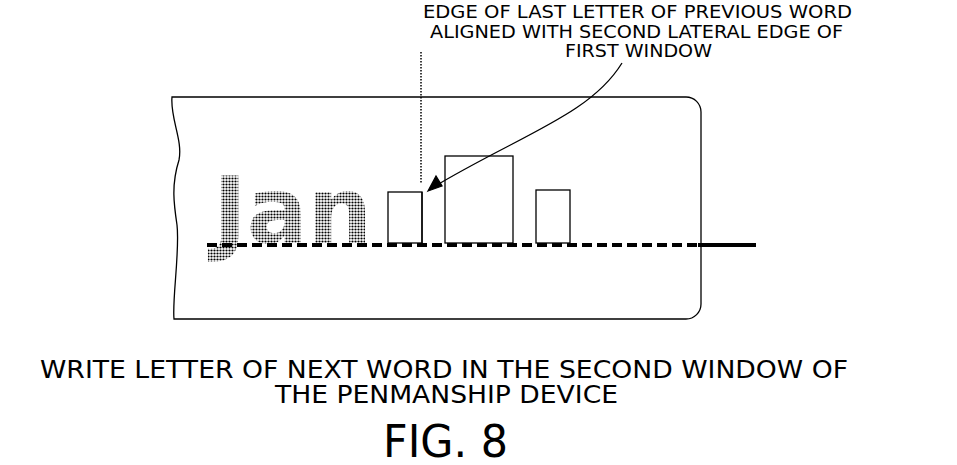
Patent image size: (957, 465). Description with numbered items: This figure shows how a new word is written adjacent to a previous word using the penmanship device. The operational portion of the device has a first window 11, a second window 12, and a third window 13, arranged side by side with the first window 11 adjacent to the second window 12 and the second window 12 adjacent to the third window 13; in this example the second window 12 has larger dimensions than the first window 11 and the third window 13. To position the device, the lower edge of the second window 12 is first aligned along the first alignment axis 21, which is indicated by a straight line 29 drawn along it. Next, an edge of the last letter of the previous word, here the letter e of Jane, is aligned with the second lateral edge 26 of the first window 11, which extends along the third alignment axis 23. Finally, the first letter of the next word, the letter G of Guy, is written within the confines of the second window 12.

The first window 11 is at (392, 191).
The second window 12 is at (453, 155).
The third window 13 is at (550, 190).
The first alignment axis 21 is at (643, 240).
The third alignment axis 23 is at (421, 68).
The second lateral edge 26 is at (424, 243).
The straight line 29 is at (744, 233).